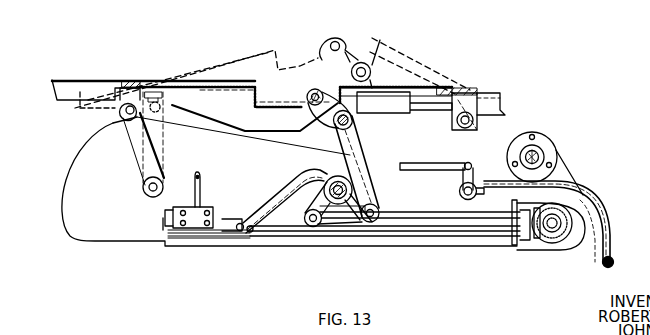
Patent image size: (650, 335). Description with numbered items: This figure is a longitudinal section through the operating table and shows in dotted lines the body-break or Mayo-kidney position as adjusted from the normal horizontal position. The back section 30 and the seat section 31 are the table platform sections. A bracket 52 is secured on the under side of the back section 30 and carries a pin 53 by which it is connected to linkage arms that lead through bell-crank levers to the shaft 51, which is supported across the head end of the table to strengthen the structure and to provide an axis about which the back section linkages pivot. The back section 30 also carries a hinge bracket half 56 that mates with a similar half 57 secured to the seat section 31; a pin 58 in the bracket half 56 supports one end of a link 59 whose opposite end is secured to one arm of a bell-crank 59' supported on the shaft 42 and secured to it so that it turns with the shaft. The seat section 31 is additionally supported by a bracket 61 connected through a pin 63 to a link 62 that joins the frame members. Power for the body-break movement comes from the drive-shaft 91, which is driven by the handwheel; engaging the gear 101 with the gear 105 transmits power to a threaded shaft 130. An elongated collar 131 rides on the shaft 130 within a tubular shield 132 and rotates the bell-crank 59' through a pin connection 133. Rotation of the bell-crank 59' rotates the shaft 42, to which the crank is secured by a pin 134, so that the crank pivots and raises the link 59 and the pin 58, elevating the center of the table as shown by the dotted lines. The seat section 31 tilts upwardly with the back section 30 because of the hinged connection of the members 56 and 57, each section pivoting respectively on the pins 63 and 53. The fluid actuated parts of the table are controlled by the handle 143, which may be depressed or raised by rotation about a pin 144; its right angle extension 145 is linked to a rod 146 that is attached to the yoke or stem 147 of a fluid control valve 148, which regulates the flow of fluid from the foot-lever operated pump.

The back section 30 is at (481, 95).
The seat section 31 is at (62, 87).
The shaft 42 is at (336, 181).
The shaft 51 is at (540, 157).
The bracket 52 is at (452, 118).
The pin 53 is at (478, 118).
The hinge bracket half 56 is at (325, 125).
The hinge bracket half 57 is at (240, 129).
The pin 58 is at (330, 62).
The link 59 is at (368, 164).
The bell-crank 59' is at (379, 206).
The bracket 61 is at (121, 113).
The link 62 is at (133, 152).
The pin 63 is at (158, 113).
The drive-shaft 91 is at (553, 243).
The gear 101 is at (547, 240).
The gear 105 is at (547, 232).
The threaded shaft 130 is at (528, 238).
The elongated collar 131 is at (356, 222).
The tubular shield 132 is at (442, 240).
The pin connection 133 is at (312, 228).
The pin 134 is at (325, 192).
The handle 143 is at (612, 260).
The pin 144 is at (459, 192).
The right angle extension 145 is at (478, 168).
The rod 146 is at (413, 165).
The yoke or stem 147 is at (239, 235).
The fluid control valve 148 is at (177, 243).